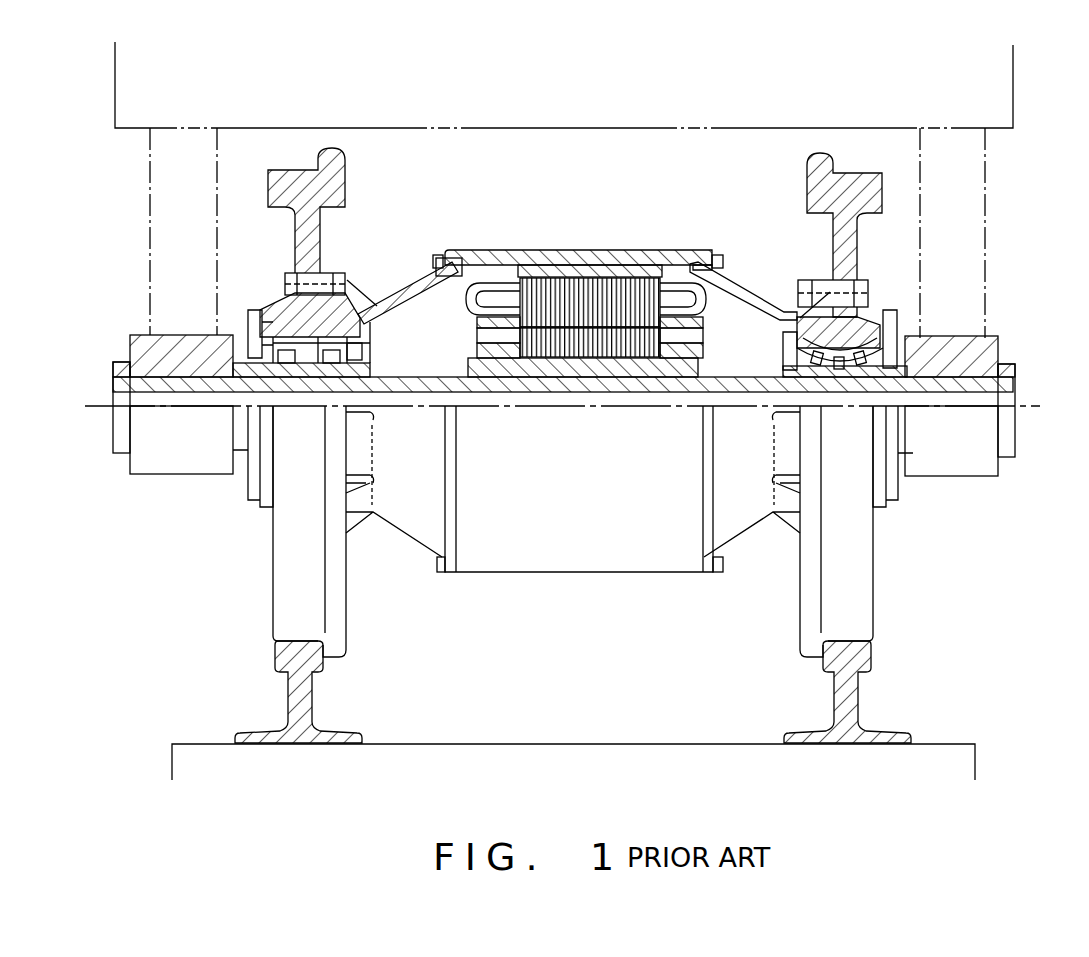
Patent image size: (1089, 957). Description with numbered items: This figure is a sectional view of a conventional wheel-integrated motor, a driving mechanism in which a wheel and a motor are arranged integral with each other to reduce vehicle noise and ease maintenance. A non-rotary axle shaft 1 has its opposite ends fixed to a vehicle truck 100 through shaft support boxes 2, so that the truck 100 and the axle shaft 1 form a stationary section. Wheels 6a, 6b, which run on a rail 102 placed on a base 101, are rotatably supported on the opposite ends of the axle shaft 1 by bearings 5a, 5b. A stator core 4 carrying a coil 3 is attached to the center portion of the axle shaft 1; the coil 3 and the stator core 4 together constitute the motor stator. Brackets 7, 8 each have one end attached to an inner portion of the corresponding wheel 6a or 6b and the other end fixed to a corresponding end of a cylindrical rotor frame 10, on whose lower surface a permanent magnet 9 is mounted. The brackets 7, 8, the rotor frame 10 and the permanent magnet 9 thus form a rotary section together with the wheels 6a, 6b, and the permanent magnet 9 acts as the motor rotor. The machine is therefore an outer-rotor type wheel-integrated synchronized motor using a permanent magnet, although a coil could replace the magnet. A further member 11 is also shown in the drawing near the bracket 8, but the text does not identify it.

The axle shaft 1 is at (413, 377).
The shaft support box 2 is at (140, 352).
The coil 3 is at (468, 306).
The stator core 4 is at (634, 300).
The bearing 5a is at (330, 372).
The bearing 5b is at (828, 377).
The wheel 6a is at (297, 176).
The wheel 6b is at (850, 176).
The bracket 7 is at (400, 288).
The bracket 8 is at (763, 297).
The permanent magnet 9 is at (578, 233).
The rotor frame 10 is at (590, 250).
The support bracket 11 is at (730, 312).
The vehicle truck 100 is at (998, 104).
The base 101 is at (598, 745).
The rail 102 is at (312, 692).